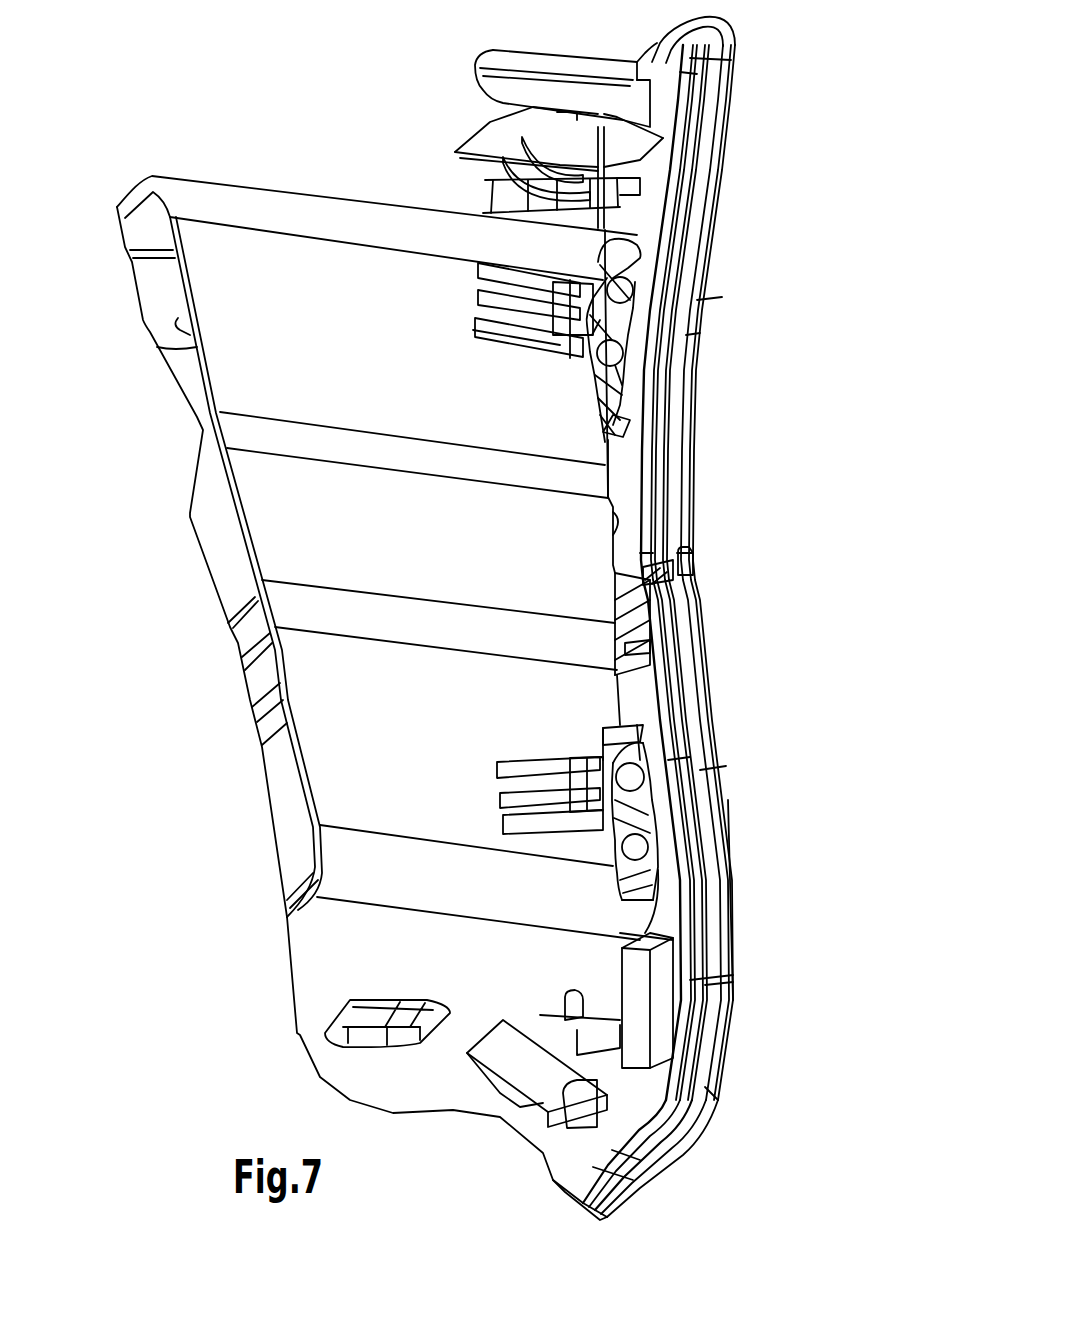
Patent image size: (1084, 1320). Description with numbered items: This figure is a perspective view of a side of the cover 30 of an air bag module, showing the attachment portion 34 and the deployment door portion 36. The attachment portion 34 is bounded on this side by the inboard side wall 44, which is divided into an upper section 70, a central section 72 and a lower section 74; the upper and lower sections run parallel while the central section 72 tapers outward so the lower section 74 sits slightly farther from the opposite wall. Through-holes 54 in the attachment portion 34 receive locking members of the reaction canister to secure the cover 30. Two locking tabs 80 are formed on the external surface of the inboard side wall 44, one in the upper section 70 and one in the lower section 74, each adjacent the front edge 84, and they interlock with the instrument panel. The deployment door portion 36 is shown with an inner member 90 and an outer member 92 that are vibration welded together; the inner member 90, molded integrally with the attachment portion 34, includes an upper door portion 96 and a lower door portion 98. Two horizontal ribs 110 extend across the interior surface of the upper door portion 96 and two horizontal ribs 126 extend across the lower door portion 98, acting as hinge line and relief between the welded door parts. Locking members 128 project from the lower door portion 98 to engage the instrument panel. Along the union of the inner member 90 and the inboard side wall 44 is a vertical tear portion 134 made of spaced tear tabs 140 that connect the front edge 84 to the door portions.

The cover 30 is at (818, 293).
The attachment portion 34 is at (365, 661).
The deployment door portion 36 is at (738, 103).
The inboard side wall 44 is at (347, 563).
The through-holes 54 is at (375, 1020).
The upper section 70 is at (270, 349).
The central section 72 is at (312, 505).
The lower section 74 is at (345, 750).
The locking tabs 80 is at (565, 312).
The front edge 84 is at (610, 522).
The inner member 90 is at (562, 1146).
The outer member 92 is at (731, 838).
The upper door portion 96 is at (640, 194).
The lower door portion 98 is at (660, 1000).
The horizontal ribs 110 is at (605, 310).
The horizontal ribs 126 is at (620, 797).
The locking members 128 is at (497, 1050).
The vertical tear portion 134 is at (622, 477).
The tear tabs 140 is at (622, 547).